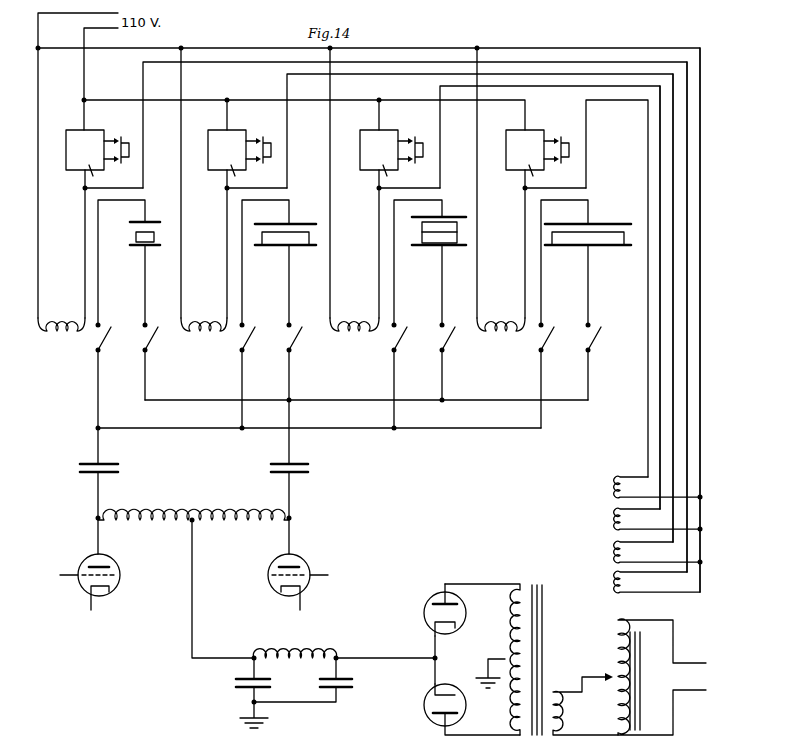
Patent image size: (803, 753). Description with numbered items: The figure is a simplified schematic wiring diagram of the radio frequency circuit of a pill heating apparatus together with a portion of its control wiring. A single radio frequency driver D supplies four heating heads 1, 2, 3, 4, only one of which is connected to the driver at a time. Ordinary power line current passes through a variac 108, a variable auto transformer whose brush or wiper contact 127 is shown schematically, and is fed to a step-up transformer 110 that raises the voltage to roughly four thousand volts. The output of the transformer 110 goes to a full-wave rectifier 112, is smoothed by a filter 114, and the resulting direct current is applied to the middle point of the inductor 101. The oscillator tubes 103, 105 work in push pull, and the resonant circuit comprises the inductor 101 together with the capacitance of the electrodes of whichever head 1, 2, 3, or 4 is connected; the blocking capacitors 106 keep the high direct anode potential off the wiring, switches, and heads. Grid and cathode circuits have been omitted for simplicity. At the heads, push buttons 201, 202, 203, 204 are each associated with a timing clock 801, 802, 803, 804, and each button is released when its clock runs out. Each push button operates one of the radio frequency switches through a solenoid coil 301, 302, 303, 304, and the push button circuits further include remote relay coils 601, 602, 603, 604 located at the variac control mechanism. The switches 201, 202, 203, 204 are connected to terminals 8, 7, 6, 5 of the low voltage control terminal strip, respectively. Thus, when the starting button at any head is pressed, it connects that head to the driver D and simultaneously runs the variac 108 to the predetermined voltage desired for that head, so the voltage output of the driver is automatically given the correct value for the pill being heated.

The push button 201 is at (104, 214).
The push button 202 is at (247, 214).
The push button 203 is at (400, 214).
The push button 204 is at (546, 214).
The timing clock 801 is at (85, 150).
The timing clock 802 is at (227, 150).
The timing clock 803 is at (379, 150).
The timing clock 804 is at (525, 150).
The heating head 1 is at (145, 224).
The heating head 2 is at (285, 225).
The heating head 3 is at (439, 221).
The heating head 4 is at (588, 225).
The radio frequency switch solenoid coil 301 is at (61, 333).
The radio frequency switch solenoid coil 302 is at (204, 333).
The radio frequency switch solenoid coil 303 is at (354, 333).
The radio frequency switch solenoid coil 304 is at (501, 333).
The terminal 5 is at (648, 384).
The terminal 6 is at (660, 398).
The terminal 7 is at (673, 413).
The terminal 8 is at (687, 428).
The remote relay coil 601 is at (643, 581).
The remote relay coil 602 is at (644, 552).
The remote relay coil 603 is at (644, 519).
The remote relay coil 604 is at (644, 487).
The blocking capacitor 106 is at (210, 468).
The inductor 101 is at (194, 507).
The radio frequency driver D is at (222, 588).
The oscillator tube 103 is at (120, 568).
The oscillator tube 105 is at (311, 568).
The rectifier 112 is at (449, 660).
The filter 114 is at (335, 688).
The step-up transformer 110 is at (531, 668).
The variac 108 is at (667, 685).
The variac wiper contact 127 is at (610, 675).